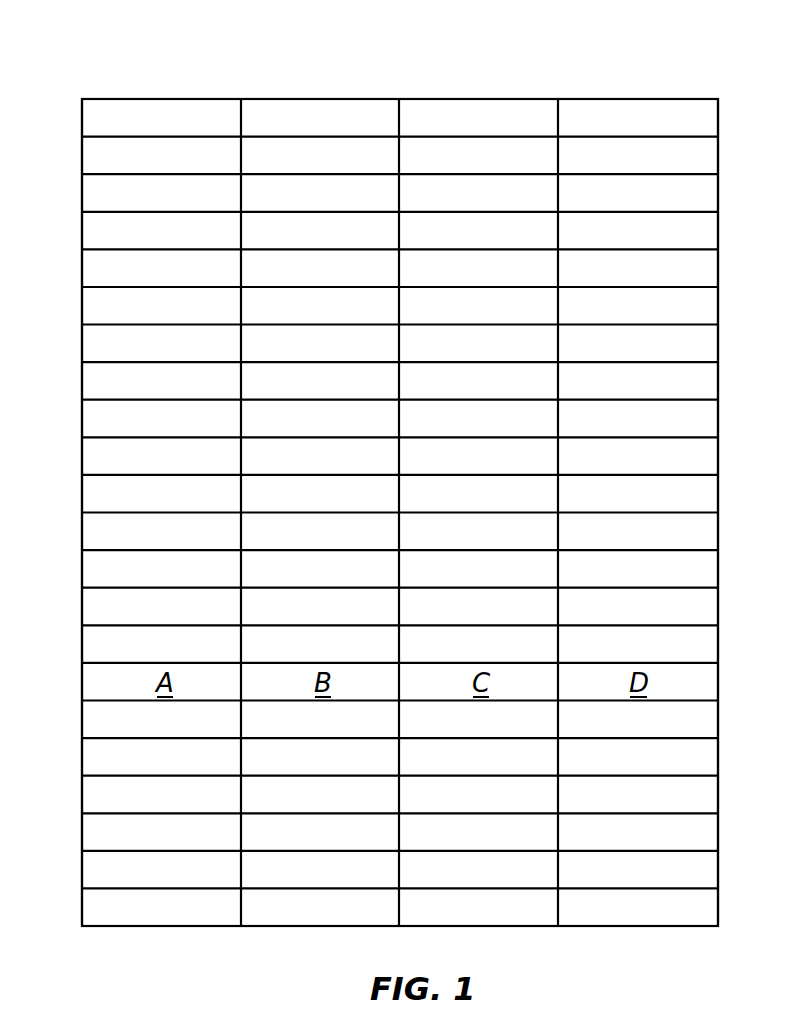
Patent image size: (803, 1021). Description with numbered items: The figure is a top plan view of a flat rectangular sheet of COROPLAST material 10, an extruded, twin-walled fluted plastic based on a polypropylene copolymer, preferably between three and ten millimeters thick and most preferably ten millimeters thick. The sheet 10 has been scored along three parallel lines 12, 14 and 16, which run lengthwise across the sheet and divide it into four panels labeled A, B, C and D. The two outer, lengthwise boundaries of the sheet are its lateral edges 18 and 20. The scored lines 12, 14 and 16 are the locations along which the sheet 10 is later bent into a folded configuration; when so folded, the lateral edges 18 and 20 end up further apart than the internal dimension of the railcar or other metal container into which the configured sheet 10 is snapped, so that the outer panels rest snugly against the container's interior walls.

The sheet of COROPLAST material 10 is at (530, 82).
The scored line 12 is at (248, 118).
The scored line 14 is at (407, 118).
The scored line 16 is at (570, 153).
The lateral edge 18 is at (85, 830).
The lateral edge 20 is at (718, 822).